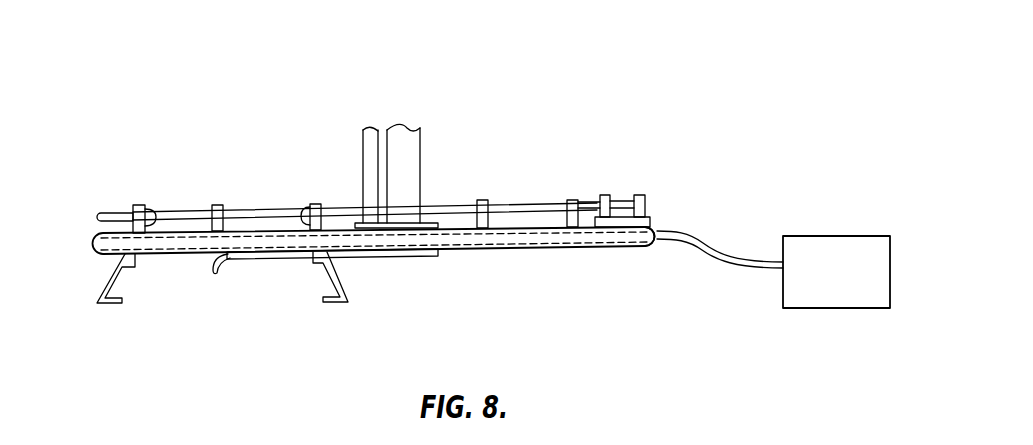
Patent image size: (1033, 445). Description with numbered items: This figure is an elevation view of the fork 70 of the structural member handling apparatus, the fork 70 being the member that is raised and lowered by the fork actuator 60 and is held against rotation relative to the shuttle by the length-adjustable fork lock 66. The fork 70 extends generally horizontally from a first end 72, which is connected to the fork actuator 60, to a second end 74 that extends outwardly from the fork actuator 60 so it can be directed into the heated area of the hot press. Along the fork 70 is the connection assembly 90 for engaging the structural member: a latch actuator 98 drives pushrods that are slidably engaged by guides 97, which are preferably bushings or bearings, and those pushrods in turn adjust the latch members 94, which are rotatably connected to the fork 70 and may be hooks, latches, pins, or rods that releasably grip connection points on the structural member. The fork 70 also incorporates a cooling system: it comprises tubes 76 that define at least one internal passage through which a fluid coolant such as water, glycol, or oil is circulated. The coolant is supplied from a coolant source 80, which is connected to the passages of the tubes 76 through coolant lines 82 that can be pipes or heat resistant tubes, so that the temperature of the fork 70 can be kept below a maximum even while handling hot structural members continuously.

The fork actuator 60 is at (422, 158).
The fork lock 66 is at (363, 152).
The fork 70 is at (135, 158).
The first end 72 is at (87, 248).
The second end 74 is at (655, 253).
The tubes 76 is at (590, 250).
The coolant source 80 is at (838, 308).
The coolant lines 82 is at (690, 237).
The connection assembly 90 is at (97, 216).
The latch members 94 is at (117, 305).
The guides 97 is at (140, 204).
The latch actuator 98 is at (640, 195).